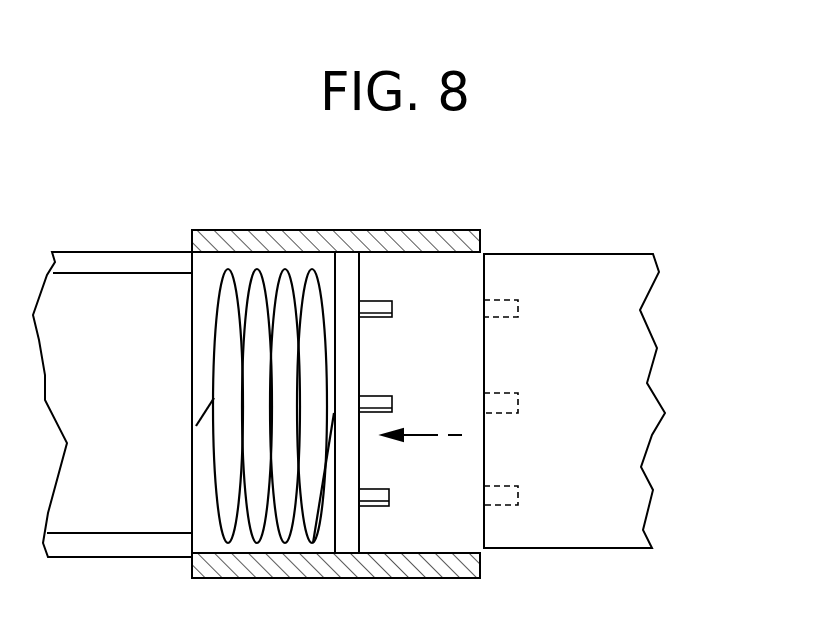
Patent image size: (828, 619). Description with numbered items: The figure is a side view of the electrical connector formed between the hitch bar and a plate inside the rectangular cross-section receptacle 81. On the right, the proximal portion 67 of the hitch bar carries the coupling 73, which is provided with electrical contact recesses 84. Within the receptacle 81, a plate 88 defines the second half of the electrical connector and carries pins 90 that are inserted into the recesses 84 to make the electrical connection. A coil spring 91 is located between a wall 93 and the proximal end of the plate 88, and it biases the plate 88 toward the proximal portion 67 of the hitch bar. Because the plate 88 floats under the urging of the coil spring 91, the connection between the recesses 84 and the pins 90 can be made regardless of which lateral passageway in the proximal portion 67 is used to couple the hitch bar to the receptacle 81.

The rectangular cross-section receptacle 81 is at (218, 238).
The coil spring 91 is at (240, 270).
The plate 88 is at (347, 263).
The coupling 73 is at (458, 306).
The proximal portion 67 is at (598, 248).
The electrical contact recesses 84 is at (495, 312).
The pins 90 is at (371, 308).
The wall 93 is at (192, 343).